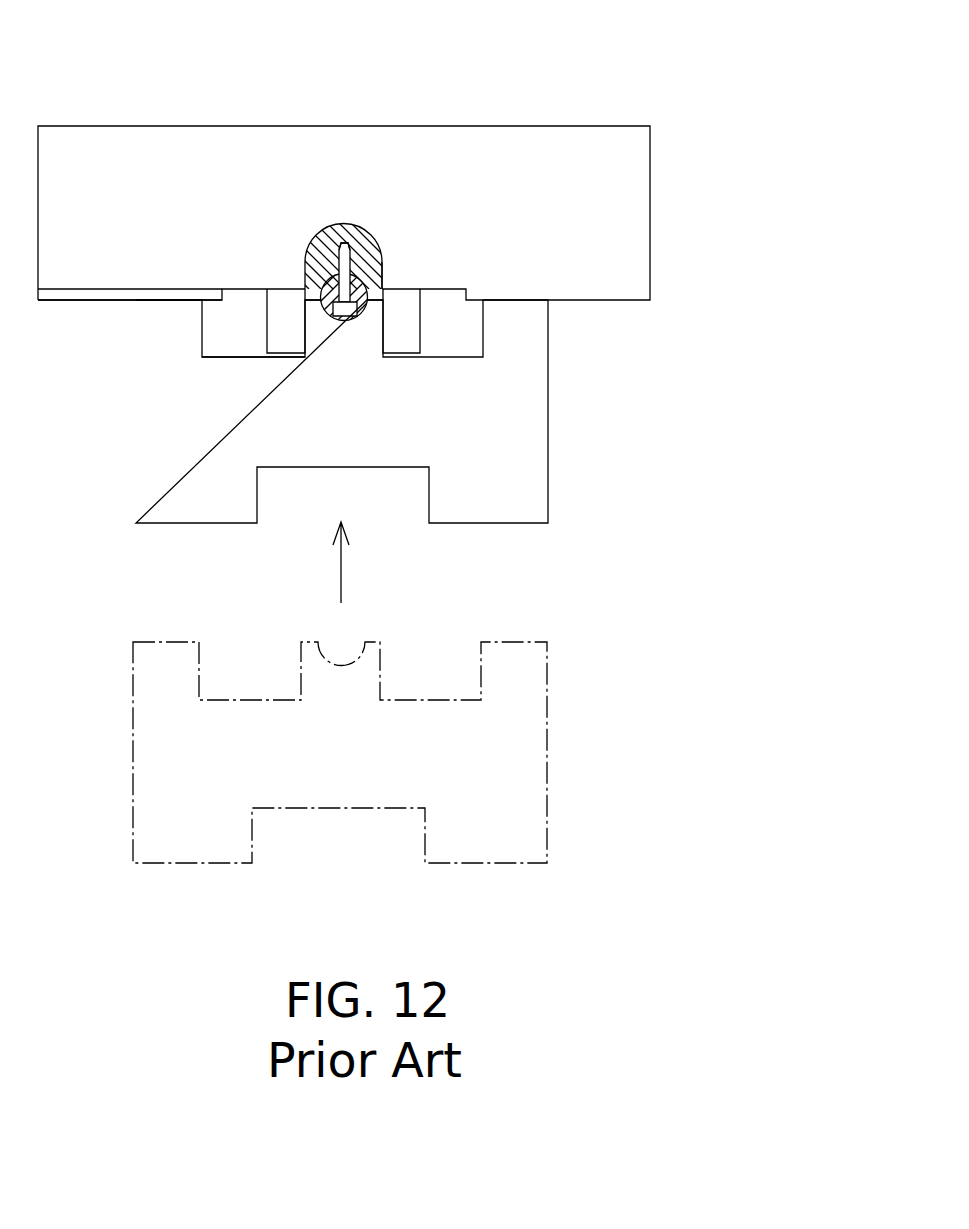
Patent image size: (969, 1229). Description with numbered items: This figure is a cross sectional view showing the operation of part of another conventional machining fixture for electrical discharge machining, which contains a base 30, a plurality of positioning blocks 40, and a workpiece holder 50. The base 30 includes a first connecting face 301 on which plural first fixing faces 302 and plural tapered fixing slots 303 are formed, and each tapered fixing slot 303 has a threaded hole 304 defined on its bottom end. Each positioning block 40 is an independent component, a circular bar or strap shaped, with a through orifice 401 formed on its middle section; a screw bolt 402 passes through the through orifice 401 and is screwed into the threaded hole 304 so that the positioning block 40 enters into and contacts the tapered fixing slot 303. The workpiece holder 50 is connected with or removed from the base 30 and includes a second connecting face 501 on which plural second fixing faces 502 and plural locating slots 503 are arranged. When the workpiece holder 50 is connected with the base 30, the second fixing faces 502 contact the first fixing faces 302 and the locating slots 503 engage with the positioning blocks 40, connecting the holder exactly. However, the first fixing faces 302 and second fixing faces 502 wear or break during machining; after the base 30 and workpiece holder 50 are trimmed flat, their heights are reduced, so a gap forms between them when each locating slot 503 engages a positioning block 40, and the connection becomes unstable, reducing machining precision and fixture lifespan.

The base 30 is at (655, 190).
The first connecting face 301 is at (75, 289).
The first fixing face 302 is at (110, 301).
The tapered fixing slot 303 is at (373, 262).
The threaded hole 304 is at (356, 243).
The positioning block 40 is at (372, 305).
The through orifice 401 is at (320, 245).
The screw bolt 402 is at (345, 222).
The workpiece holder 50 is at (550, 463).
The second connecting face 501 is at (240, 356).
The second fixing face 502 is at (167, 299).
The locating slot 503 is at (326, 316).